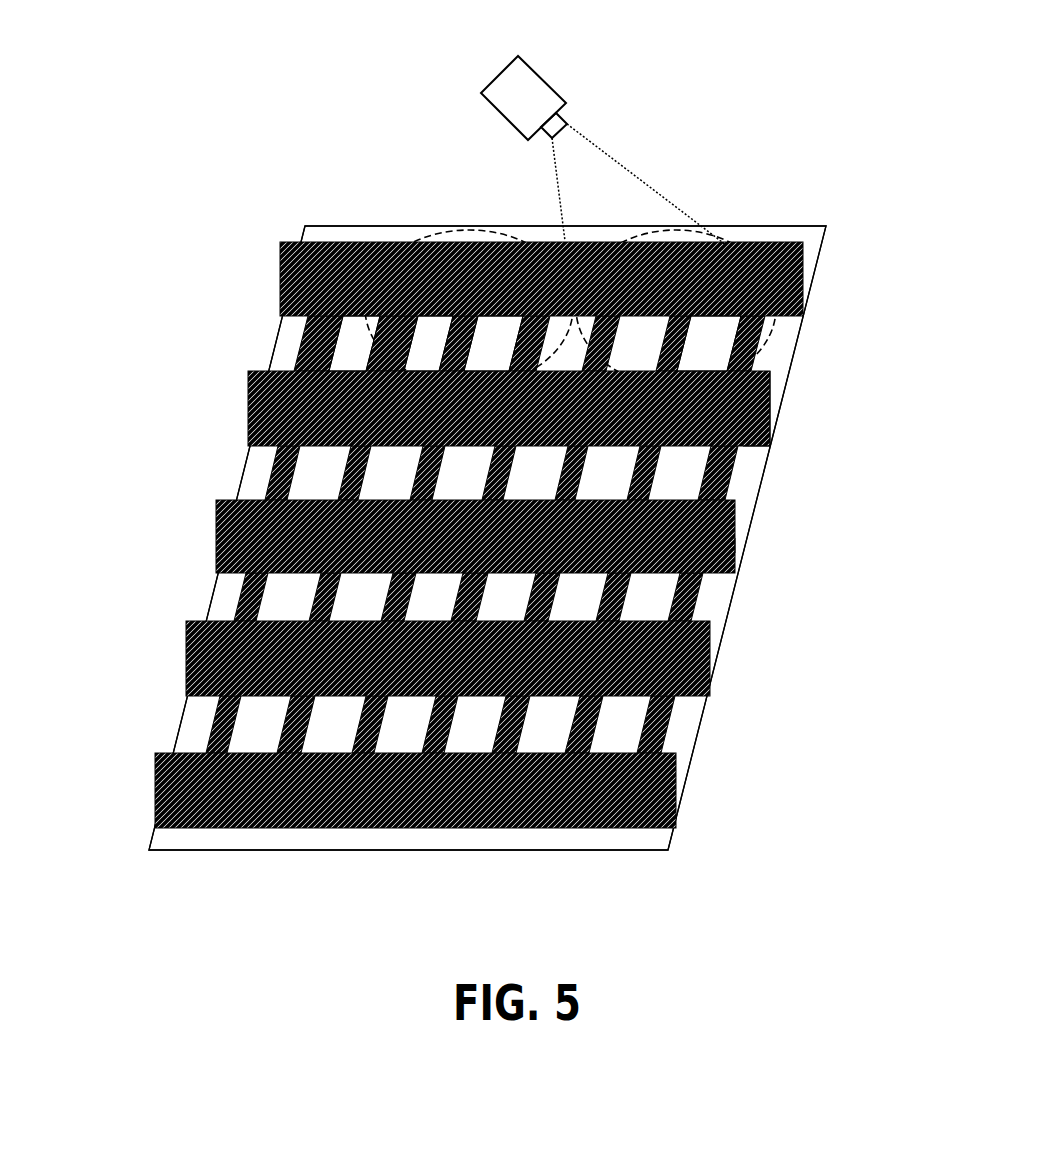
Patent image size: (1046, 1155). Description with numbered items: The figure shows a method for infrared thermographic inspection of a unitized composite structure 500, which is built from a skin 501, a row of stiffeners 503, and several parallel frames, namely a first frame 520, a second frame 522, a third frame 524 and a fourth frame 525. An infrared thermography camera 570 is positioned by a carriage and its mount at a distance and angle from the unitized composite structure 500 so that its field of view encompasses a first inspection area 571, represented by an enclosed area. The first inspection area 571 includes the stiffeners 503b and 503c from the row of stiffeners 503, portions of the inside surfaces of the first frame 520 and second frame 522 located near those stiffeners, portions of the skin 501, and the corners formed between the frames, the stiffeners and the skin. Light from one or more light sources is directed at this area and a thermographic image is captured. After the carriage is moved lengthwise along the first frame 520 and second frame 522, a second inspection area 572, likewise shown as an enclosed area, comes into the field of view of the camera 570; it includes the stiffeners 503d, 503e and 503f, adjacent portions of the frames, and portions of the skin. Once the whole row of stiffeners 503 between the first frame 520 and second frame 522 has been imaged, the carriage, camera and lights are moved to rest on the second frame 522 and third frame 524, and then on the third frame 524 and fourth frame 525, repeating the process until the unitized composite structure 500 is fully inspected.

The unitized composite structure 500 is at (838, 186).
The skin 501 is at (633, 845).
The row of stiffeners 503 is at (268, 333).
The stiffener 503b is at (682, 348).
The stiffener 503c is at (762, 408).
The stiffener 503d is at (510, 332).
The stiffener 503e is at (437, 340).
The stiffener 503f is at (365, 337).
The first frame 520 is at (272, 275).
The second frame 522 is at (240, 408).
The third frame 524 is at (207, 527).
The fourth frame 525 is at (177, 663).
The infrared thermography camera 570 is at (545, 68).
The first inspection area 571 is at (612, 340).
The second inspection area 572 is at (540, 427).